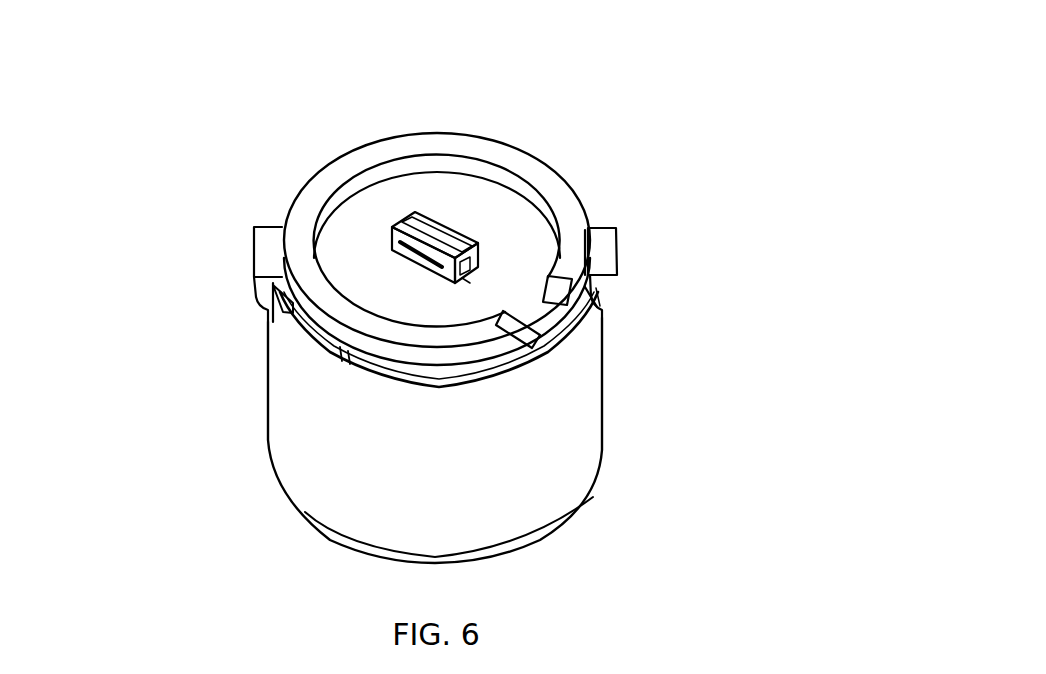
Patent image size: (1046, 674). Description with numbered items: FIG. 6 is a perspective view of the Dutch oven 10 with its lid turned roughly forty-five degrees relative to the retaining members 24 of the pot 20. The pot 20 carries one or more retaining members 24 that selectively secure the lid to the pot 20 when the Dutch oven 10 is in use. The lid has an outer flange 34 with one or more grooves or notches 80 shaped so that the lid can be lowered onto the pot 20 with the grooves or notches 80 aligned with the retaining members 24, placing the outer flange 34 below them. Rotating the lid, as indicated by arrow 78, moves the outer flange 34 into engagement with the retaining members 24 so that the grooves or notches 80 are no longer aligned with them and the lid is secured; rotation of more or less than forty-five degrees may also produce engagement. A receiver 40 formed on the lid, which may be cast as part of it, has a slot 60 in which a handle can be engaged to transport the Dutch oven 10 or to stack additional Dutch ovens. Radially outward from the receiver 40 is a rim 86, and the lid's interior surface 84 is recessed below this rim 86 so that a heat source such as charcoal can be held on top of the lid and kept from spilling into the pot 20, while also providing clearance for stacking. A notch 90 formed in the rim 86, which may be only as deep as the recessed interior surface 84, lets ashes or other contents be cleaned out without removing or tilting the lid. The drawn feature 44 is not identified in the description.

The Dutch oven 10 is at (768, 155).
The pot 20 is at (604, 412).
The retaining members 24 is at (253, 277).
The outer flange 34 is at (603, 310).
The receiver 40 is at (384, 244).
The snap feature 44 is at (466, 277).
The slot 60 is at (480, 287).
The arrow 78 is at (367, 116).
The grooves or notches 80 is at (584, 208).
The interior surface 84 is at (470, 188).
The rim 86 is at (470, 150).
The notch 90 is at (550, 320).